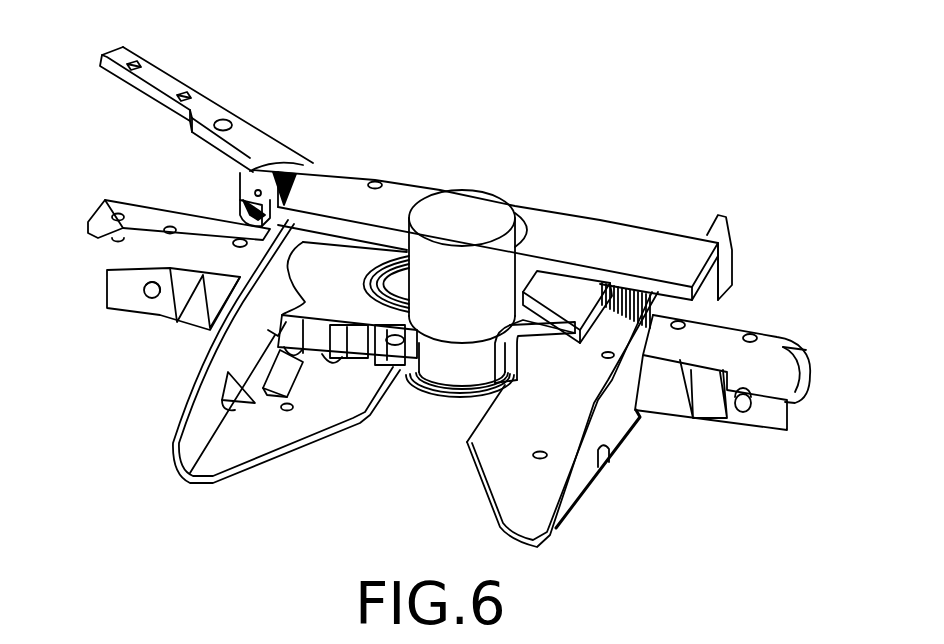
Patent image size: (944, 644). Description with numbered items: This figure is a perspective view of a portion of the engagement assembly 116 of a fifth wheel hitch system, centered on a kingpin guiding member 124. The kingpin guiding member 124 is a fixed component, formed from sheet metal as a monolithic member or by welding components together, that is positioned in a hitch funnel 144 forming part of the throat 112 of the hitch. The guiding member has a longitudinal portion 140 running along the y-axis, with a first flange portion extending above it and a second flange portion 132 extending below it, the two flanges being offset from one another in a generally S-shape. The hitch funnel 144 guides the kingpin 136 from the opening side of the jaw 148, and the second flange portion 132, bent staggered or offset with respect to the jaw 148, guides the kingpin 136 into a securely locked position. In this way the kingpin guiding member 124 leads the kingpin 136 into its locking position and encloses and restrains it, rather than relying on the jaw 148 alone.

The engagement assembly 116 is at (691, 95).
The throat 112 is at (364, 440).
The kingpin guiding member 124 is at (575, 291).
The second flange portion 132 is at (470, 410).
The kingpin 136 is at (440, 211).
The longitudinal portion 140 is at (517, 363).
The hitch funnel 144 is at (535, 340).
The jaw 148 is at (275, 330).